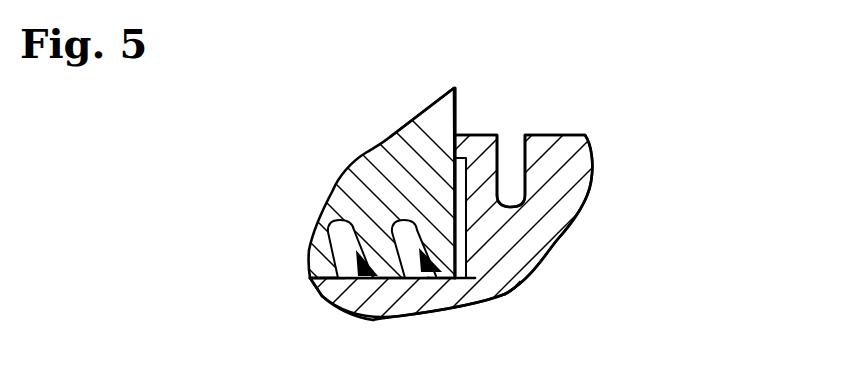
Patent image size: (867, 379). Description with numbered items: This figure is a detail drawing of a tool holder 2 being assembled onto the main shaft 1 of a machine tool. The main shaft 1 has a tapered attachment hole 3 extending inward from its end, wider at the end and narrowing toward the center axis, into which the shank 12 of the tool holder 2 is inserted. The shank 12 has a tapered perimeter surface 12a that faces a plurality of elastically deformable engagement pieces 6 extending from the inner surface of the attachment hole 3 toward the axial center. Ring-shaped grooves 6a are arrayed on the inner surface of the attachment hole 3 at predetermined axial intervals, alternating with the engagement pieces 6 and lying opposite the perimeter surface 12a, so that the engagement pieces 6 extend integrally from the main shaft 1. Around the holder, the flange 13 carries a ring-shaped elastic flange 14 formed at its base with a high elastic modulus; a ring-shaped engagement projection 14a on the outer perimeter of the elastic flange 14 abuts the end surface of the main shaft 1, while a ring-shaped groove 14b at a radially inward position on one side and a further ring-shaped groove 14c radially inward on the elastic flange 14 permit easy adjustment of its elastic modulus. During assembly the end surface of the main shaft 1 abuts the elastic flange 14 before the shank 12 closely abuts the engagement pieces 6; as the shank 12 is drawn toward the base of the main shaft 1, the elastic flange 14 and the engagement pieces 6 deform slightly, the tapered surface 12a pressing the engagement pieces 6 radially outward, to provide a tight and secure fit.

The main shaft 1 is at (328, 183).
The tool holder 2 is at (600, 163).
The attachment hole 3 is at (322, 295).
The elastic engagement pieces 6 is at (373, 318).
The ring-shaped grooves 6a is at (337, 300).
The shank 12 is at (443, 300).
The tapered perimeter surface 12a is at (505, 297).
The flange 13 is at (543, 237).
The ring-shaped elastic flange 14 is at (488, 135).
The ring-shaped engagement projection 14a is at (434, 113).
The ring-shaped groove 14b is at (443, 183).
The ring-shaped groove 14c is at (512, 170).